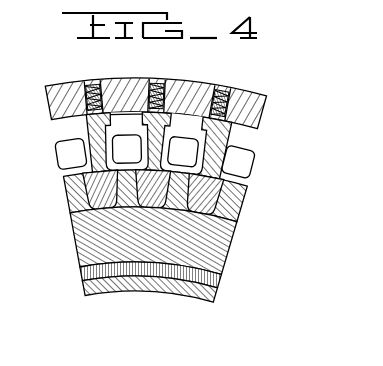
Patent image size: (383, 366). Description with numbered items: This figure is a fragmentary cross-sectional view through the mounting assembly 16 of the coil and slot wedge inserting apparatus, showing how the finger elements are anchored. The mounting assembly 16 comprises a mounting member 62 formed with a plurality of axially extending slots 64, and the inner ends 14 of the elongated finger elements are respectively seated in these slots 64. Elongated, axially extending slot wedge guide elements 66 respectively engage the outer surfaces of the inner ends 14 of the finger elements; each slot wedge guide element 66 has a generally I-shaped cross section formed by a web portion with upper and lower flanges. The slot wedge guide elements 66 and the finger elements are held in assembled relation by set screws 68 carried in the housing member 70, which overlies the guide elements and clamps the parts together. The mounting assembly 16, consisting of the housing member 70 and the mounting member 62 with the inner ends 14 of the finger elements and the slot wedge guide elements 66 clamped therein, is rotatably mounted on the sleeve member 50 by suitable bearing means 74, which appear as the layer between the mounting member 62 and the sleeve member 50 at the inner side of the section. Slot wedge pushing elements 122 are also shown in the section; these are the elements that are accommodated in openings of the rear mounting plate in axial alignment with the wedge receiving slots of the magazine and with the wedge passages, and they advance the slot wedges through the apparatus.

The mounting assembly 16 is at (262, 82).
The housing member 70 is at (268, 113).
The set screws 68 is at (219, 86).
The bearing means 74 is at (217, 282).
The slot wedge guide elements 66 is at (250, 127).
The slot wedge pushing elements 122 is at (248, 163).
The inner ends 14 is at (213, 192).
The axially extending slots 64 is at (70, 218).
The mounting member 62 is at (235, 237).
The sleeve member 50 is at (210, 294).